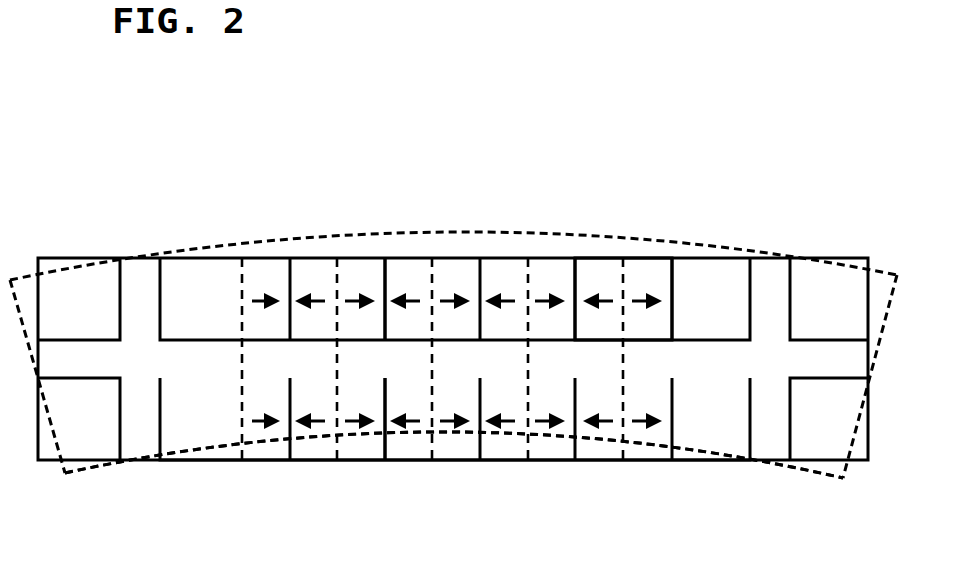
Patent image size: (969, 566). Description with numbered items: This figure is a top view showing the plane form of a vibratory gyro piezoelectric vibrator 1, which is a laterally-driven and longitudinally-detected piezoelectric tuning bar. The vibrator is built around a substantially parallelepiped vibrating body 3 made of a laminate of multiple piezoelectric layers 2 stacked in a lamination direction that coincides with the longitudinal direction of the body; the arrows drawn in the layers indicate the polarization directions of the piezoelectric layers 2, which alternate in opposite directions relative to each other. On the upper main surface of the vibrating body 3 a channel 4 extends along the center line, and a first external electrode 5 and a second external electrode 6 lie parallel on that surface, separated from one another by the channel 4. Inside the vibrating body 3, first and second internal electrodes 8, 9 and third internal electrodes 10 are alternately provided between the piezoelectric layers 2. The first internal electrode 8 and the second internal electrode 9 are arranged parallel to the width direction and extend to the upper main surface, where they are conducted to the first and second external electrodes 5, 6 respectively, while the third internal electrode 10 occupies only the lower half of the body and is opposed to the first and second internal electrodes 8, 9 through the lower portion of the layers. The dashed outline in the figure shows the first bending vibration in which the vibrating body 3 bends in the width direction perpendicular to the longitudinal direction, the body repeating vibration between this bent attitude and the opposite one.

The vibratory gyro piezoelectric vibrator 1 is at (155, 232).
The piezoelectric layers 2 is at (365, 275).
The vibrating body 3 is at (268, 262).
The channel 4 is at (675, 360).
The first external electrode 5 is at (594, 278).
The second external electrode 6 is at (603, 444).
The first internal electrode 8 is at (387, 283).
The second internal electrode 9 is at (387, 462).
The third internal electrode 10 is at (333, 432).